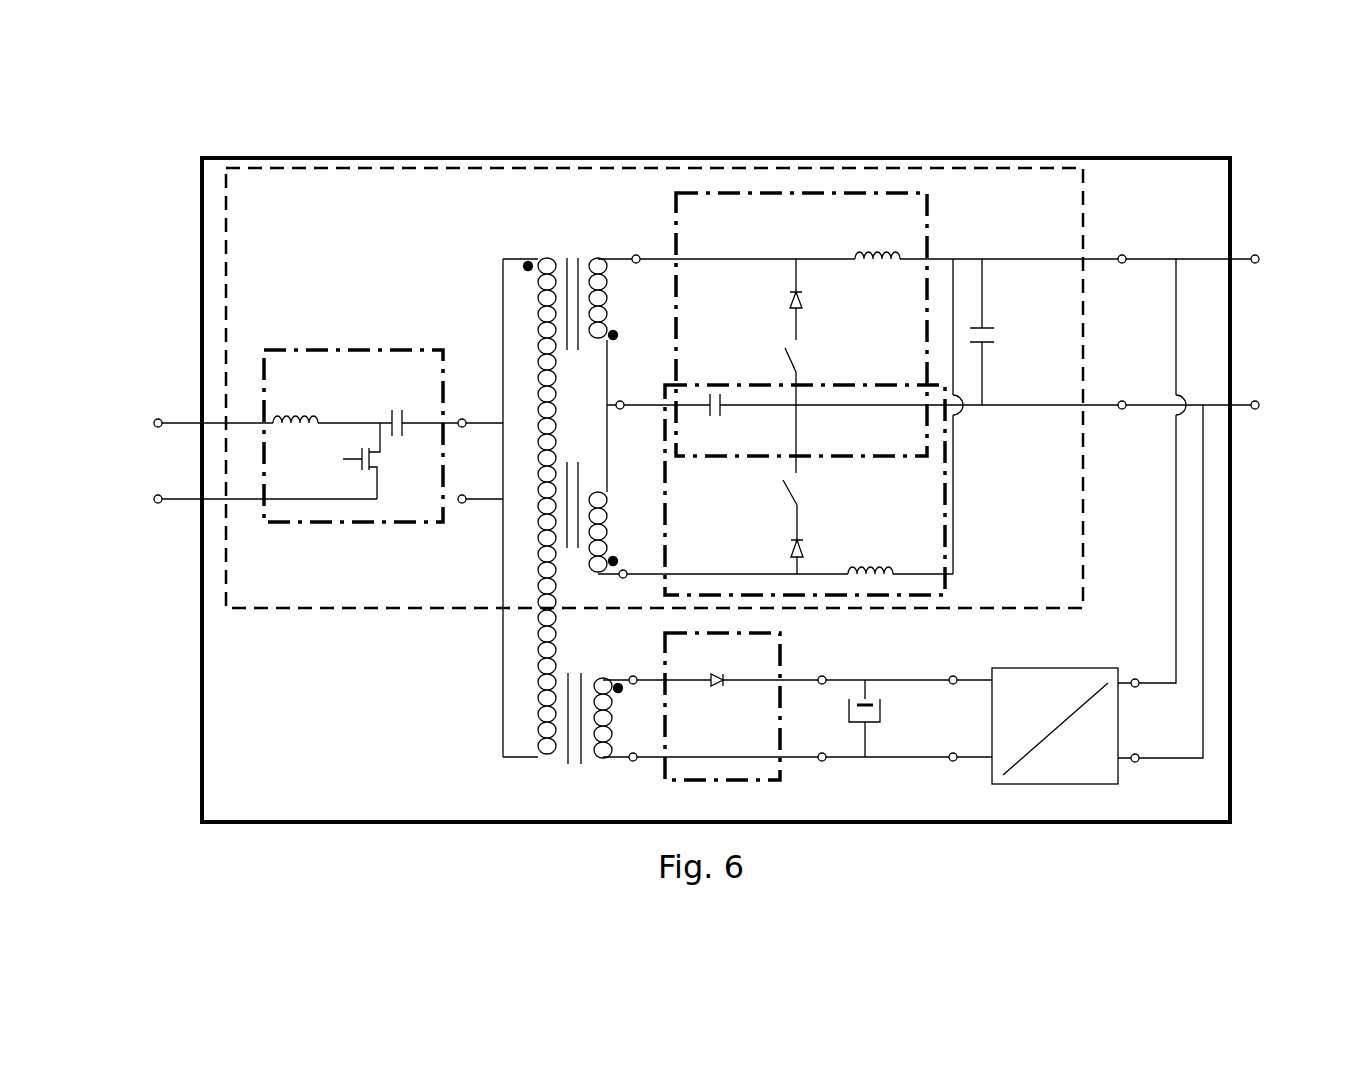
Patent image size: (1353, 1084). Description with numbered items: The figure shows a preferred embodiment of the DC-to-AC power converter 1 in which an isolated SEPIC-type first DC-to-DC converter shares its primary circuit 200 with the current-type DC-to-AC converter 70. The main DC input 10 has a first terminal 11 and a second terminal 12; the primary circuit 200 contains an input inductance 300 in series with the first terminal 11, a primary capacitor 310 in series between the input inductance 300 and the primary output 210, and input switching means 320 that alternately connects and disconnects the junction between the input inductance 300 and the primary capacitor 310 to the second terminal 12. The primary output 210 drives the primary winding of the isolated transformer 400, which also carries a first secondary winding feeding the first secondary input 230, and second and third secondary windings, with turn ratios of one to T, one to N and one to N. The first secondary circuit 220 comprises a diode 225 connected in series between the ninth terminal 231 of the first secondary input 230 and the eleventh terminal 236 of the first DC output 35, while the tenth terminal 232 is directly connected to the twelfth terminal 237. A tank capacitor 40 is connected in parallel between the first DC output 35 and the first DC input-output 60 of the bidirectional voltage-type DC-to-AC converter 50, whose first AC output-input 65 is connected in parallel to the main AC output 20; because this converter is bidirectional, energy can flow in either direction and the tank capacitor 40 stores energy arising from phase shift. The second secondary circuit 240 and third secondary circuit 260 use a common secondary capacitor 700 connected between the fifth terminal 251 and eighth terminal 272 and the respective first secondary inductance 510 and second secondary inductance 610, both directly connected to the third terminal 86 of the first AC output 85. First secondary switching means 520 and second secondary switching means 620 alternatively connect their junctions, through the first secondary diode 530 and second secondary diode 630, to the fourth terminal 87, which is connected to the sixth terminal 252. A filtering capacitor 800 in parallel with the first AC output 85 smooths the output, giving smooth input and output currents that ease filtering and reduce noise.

The DC-to-AC power converter 1 is at (906, 158).
The main DC input 10 is at (152, 431).
The first terminal 11 is at (207, 408).
The second terminal 12 is at (259, 524).
The main AC output 20 is at (1262, 270).
The first DC output 35 is at (837, 718).
The tank capacitor 40 is at (877, 727).
The bidirectional voltage-type DC-to-AC converter 50 is at (1061, 740).
The first DC input-output 60 is at (967, 718).
The first AC output-input 65 is at (1143, 693).
The current-type DC-to-AC converter 70 is at (1083, 205).
The first AC output 85 is at (1127, 270).
The third terminal 86 is at (1177, 246).
The fourth terminal 87 is at (1181, 423).
The primary circuit 200 is at (352, 350).
The primary output 210 is at (476, 461).
The first secondary circuit 220 is at (722, 723).
The diode 225 is at (757, 665).
The first secondary input 230 is at (627, 718).
The ninth terminal 231 is at (661, 664).
The tenth terminal 232 is at (715, 773).
The eleventh terminal 236 is at (872, 665).
The twelfth terminal 237 is at (878, 776).
The second secondary circuit 240 is at (930, 200).
The fifth terminal 251 is at (697, 243).
The sixth terminal 252 is at (658, 391).
The third secondary circuit 260 is at (948, 540).
The eighth terminal 272 is at (697, 588).
The input inductance 300 is at (332, 402).
The primary capacitor 310 is at (415, 409).
The input switching means 320 is at (333, 461).
The isolated transformer 400 is at (525, 257).
The first secondary inductance 510 is at (957, 241).
The first secondary switching means 520 is at (818, 409).
The first secondary diode 530 is at (822, 299).
The second secondary inductance 610 is at (880, 416).
The second secondary switching means 620 is at (818, 510).
The second secondary diode 630 is at (769, 554).
The common secondary capacitor 700 is at (906, 423).
The filtering capacitor 800 is at (1009, 332).